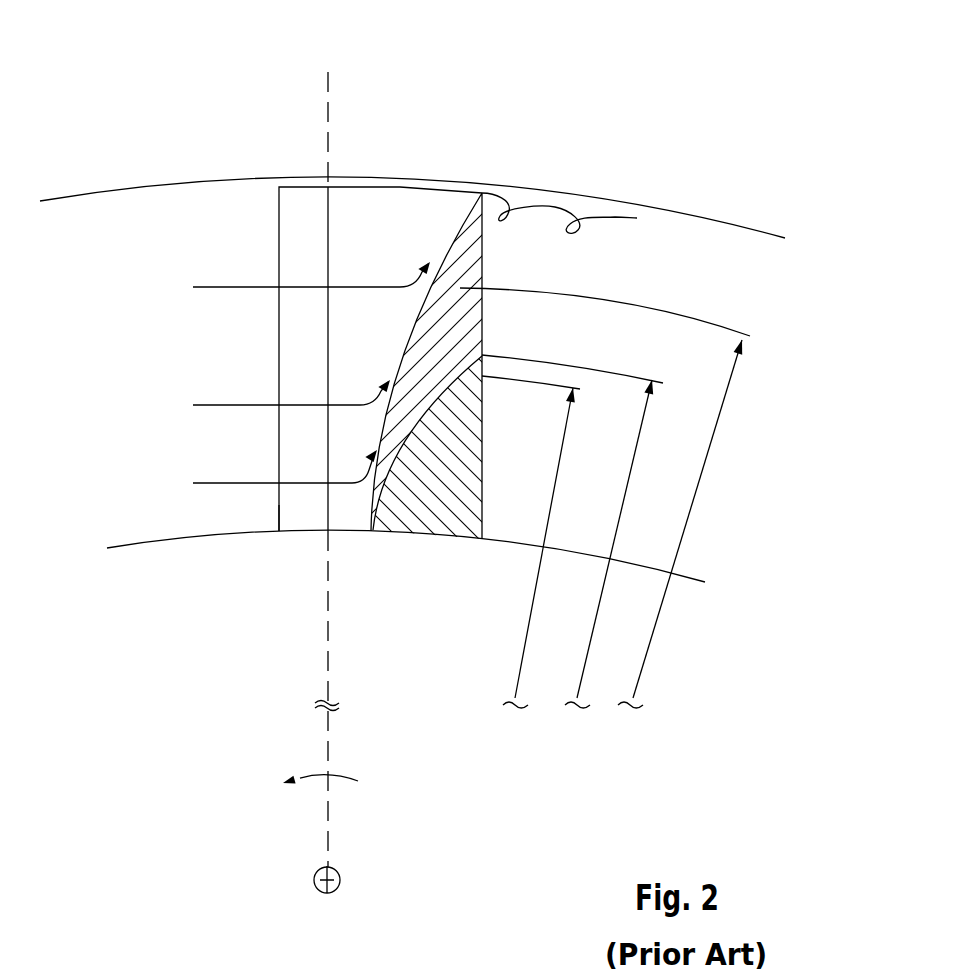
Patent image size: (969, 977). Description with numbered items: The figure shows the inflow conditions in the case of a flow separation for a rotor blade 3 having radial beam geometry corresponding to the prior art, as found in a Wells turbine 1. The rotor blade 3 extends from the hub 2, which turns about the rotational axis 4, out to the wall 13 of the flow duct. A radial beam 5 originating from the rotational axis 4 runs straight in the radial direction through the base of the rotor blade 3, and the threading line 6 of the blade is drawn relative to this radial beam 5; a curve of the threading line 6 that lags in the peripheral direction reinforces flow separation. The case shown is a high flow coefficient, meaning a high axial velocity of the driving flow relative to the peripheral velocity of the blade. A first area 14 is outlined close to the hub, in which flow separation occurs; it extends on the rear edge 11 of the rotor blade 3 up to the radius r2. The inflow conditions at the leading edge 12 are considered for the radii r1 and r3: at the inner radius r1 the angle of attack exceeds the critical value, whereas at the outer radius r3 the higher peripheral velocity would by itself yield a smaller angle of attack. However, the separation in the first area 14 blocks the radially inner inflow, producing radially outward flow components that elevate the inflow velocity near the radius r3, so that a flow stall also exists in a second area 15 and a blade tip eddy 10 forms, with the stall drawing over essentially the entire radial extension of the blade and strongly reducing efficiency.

The Wells turbine 1 is at (588, 70).
The hub 2 is at (143, 558).
The rotor blade 3 is at (292, 452).
The rotational axis 4 is at (330, 872).
The radial beam 5 is at (328, 112).
The threading line 6 is at (328, 246).
The blade tip eddy 10 is at (545, 205).
The rear edge 11 is at (483, 482).
The leading edge 12 is at (280, 518).
The wall of the flow duct 13 is at (170, 188).
The first area 14 is at (483, 443).
The second area 15 is at (473, 277).
The radius r1 is at (555, 505).
The radius r2 is at (620, 513).
The radius r3 is at (688, 522).